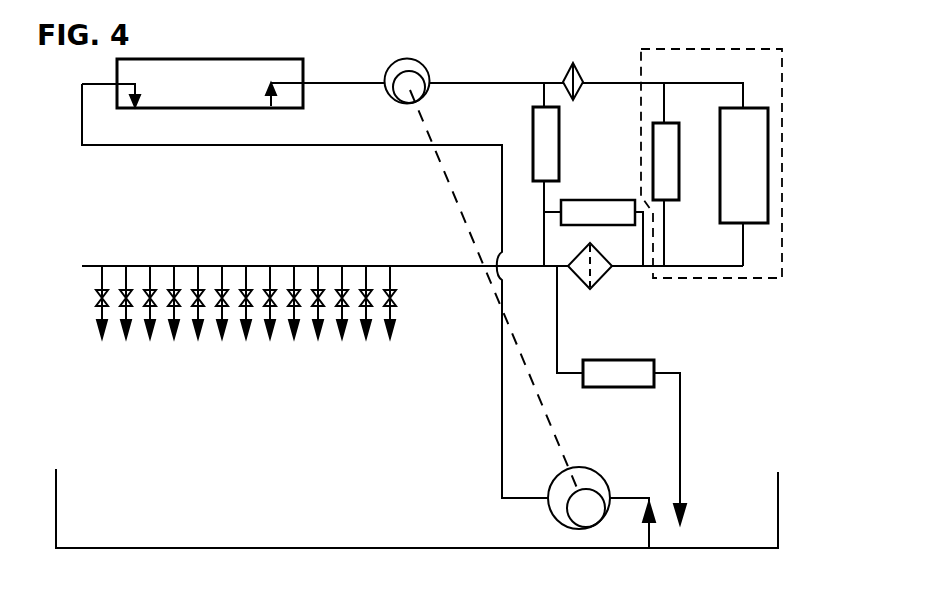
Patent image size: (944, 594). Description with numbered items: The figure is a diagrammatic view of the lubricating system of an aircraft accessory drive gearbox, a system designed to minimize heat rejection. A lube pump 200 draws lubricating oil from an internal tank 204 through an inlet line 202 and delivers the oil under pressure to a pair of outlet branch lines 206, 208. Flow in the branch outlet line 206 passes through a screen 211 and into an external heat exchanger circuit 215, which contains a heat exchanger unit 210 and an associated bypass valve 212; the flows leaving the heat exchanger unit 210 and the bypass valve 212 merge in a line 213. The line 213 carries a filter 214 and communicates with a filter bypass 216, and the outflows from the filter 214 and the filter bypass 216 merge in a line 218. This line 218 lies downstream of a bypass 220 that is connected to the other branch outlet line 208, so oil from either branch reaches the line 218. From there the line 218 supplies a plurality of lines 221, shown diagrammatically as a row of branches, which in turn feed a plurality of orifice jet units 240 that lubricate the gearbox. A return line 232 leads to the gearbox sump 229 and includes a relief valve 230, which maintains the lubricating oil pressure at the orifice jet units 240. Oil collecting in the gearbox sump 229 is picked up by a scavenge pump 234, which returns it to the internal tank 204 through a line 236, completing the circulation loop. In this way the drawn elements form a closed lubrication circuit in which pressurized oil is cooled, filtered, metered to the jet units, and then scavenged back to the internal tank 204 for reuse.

The lube pump 200 is at (408, 58).
The inlet line 202 is at (332, 82).
The internal tank 204 is at (232, 60).
The outlet branch line 206 is at (553, 82).
The outlet branch line 208 is at (541, 88).
The heat exchanger unit 210 is at (720, 206).
The screen 211 is at (584, 66).
The bypass valve 212 is at (680, 146).
The line 213 is at (727, 280).
The filter 214 is at (585, 290).
The external heat exchanger circuit 215 is at (708, 62).
The filter bypass 216 is at (618, 226).
The line 218 is at (556, 268).
The bypass 220 is at (560, 126).
The lines 221 is at (214, 265).
The gearbox sump 229 is at (175, 547).
The relief valve 230 is at (630, 388).
The return line 232 is at (682, 410).
The scavenge pump 234 is at (548, 504).
The line 236 is at (391, 146).
The orifice jet units 240 is at (240, 352).